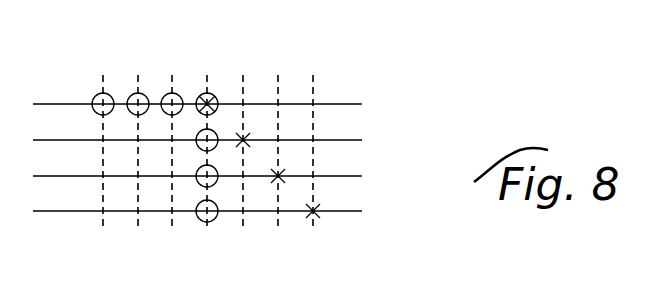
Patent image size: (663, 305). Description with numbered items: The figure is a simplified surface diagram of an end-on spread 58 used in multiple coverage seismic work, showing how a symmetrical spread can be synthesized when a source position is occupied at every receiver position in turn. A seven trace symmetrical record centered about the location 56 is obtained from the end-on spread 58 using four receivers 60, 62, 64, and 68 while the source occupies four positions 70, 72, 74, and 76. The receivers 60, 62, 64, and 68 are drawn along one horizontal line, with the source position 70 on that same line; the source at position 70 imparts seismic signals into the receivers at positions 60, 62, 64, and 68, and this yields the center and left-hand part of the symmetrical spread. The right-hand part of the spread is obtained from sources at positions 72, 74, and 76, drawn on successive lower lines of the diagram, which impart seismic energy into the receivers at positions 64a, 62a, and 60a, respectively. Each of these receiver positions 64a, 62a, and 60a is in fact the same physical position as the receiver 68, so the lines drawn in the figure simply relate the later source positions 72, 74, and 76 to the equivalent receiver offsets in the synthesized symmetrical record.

The location 56 is at (208, 74).
The end-on spread 58 is at (223, 82).
The receiver 60 is at (95, 96).
The receiver 62 is at (132, 94).
The receiver 64 is at (167, 94).
The receiver 68 is at (201, 95).
The source position 70 is at (214, 106).
The source position 72 is at (248, 138).
The source position 74 is at (283, 174).
The source position 76 is at (318, 209).
The receiver position 60a is at (203, 223).
The receiver position 62a is at (199, 182).
The receiver position 64a is at (198, 146).